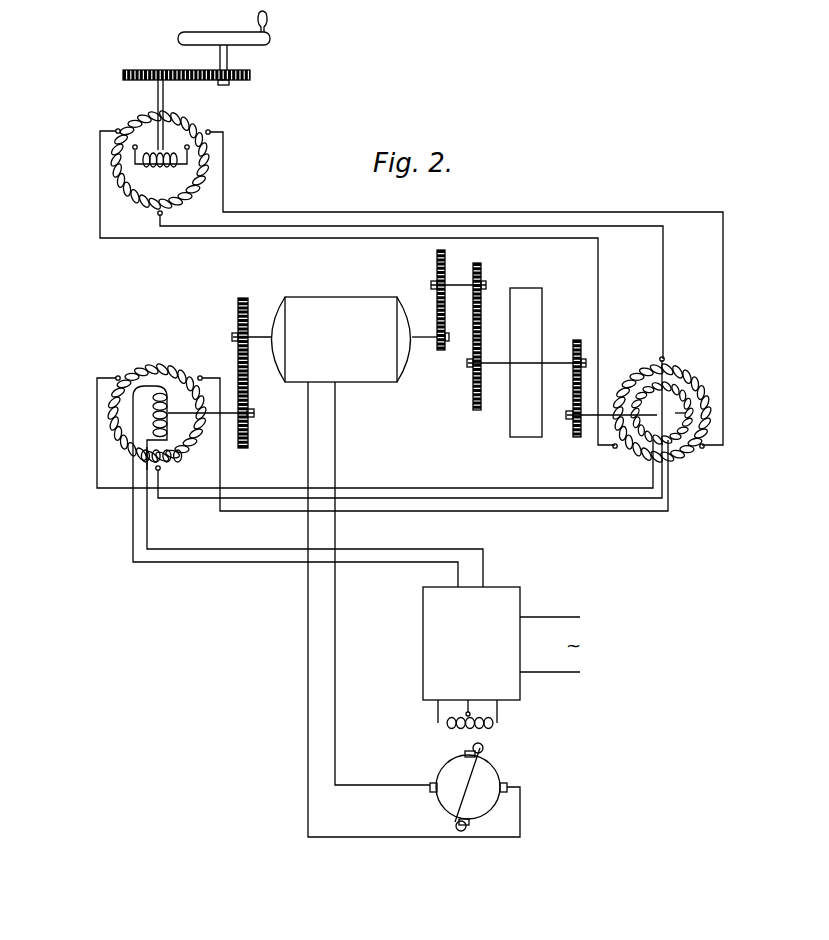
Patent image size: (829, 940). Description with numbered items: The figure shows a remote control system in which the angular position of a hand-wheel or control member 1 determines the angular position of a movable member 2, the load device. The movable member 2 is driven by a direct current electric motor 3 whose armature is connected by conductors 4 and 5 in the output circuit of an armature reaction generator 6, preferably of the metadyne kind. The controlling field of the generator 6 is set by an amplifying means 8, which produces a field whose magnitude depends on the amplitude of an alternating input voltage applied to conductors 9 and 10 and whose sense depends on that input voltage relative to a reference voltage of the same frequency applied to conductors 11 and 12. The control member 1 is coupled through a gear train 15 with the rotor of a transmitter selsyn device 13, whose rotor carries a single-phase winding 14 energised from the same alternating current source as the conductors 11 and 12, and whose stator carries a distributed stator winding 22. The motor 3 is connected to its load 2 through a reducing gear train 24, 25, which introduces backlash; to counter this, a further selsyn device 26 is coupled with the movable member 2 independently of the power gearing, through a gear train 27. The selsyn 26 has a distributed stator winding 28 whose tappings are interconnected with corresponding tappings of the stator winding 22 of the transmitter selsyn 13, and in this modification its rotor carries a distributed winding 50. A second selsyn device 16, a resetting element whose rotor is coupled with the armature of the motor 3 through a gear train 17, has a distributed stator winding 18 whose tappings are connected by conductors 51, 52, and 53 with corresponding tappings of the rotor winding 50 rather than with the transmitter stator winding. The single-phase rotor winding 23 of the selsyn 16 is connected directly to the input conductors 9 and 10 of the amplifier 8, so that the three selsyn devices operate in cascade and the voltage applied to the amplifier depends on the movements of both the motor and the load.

The control member 1 is at (262, 38).
The movable member 2 is at (542, 333).
The direct current electric motor 3 is at (335, 353).
The conductor 4 is at (337, 470).
The conductor 5 is at (306, 470).
The armature reaction generator 6 is at (460, 793).
The amplifying means 8 is at (465, 652).
The conductor 9 is at (456, 575).
The conductor 10 is at (485, 575).
The conductor 11 is at (548, 617).
The conductor 12 is at (542, 672).
The selsyn device 13 is at (177, 147).
The single-phase winding 14 is at (168, 148).
The gear train 15 is at (185, 80).
The second selsyn device 16 is at (155, 406).
The gear train 17 is at (248, 370).
The distributed stator winding 18 is at (168, 362).
The distributed stator winding 22 is at (140, 118).
The single-phase rotor winding 23 is at (178, 458).
The reducing gear train 24 is at (437, 320).
The reducing gear train 25 is at (480, 352).
The selsyn device 26 is at (684, 412).
The gear train 27 is at (575, 378).
The distributed stator winding 28 is at (688, 375).
The distributed winding 50 is at (706, 414).
The conductor 51 is at (458, 489).
The conductor 52 is at (500, 498).
The conductor 53 is at (552, 512).